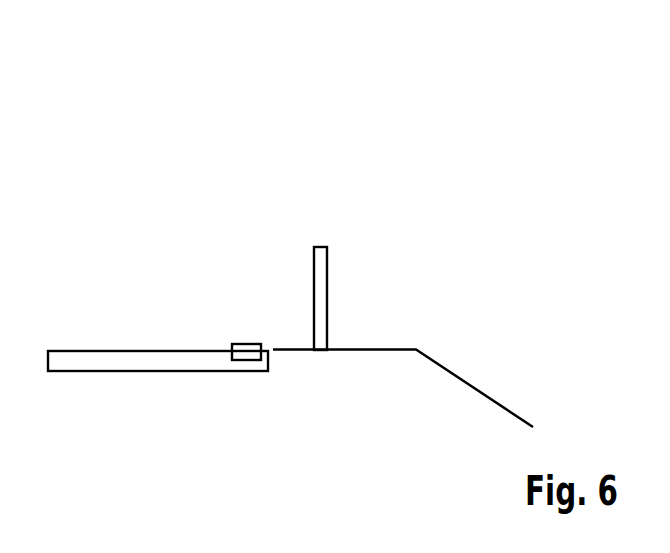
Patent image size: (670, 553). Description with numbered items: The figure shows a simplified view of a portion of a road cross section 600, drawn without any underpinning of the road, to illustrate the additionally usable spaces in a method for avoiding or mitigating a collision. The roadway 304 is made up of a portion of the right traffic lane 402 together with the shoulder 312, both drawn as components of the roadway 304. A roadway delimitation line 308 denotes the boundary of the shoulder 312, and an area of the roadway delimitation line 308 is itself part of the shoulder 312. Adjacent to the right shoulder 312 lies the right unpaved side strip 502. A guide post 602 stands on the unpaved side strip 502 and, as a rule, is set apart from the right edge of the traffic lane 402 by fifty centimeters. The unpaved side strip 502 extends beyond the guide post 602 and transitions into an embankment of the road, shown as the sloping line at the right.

The road cross section 600 is at (153, 82).
The roadway 304 is at (78, 275).
The right traffic lane 402 is at (155, 363).
The shoulder 312 is at (272, 335).
The roadway delimitation line 308 is at (246, 356).
The right unpaved side strip 502 is at (416, 232).
The guide post 602 is at (318, 295).